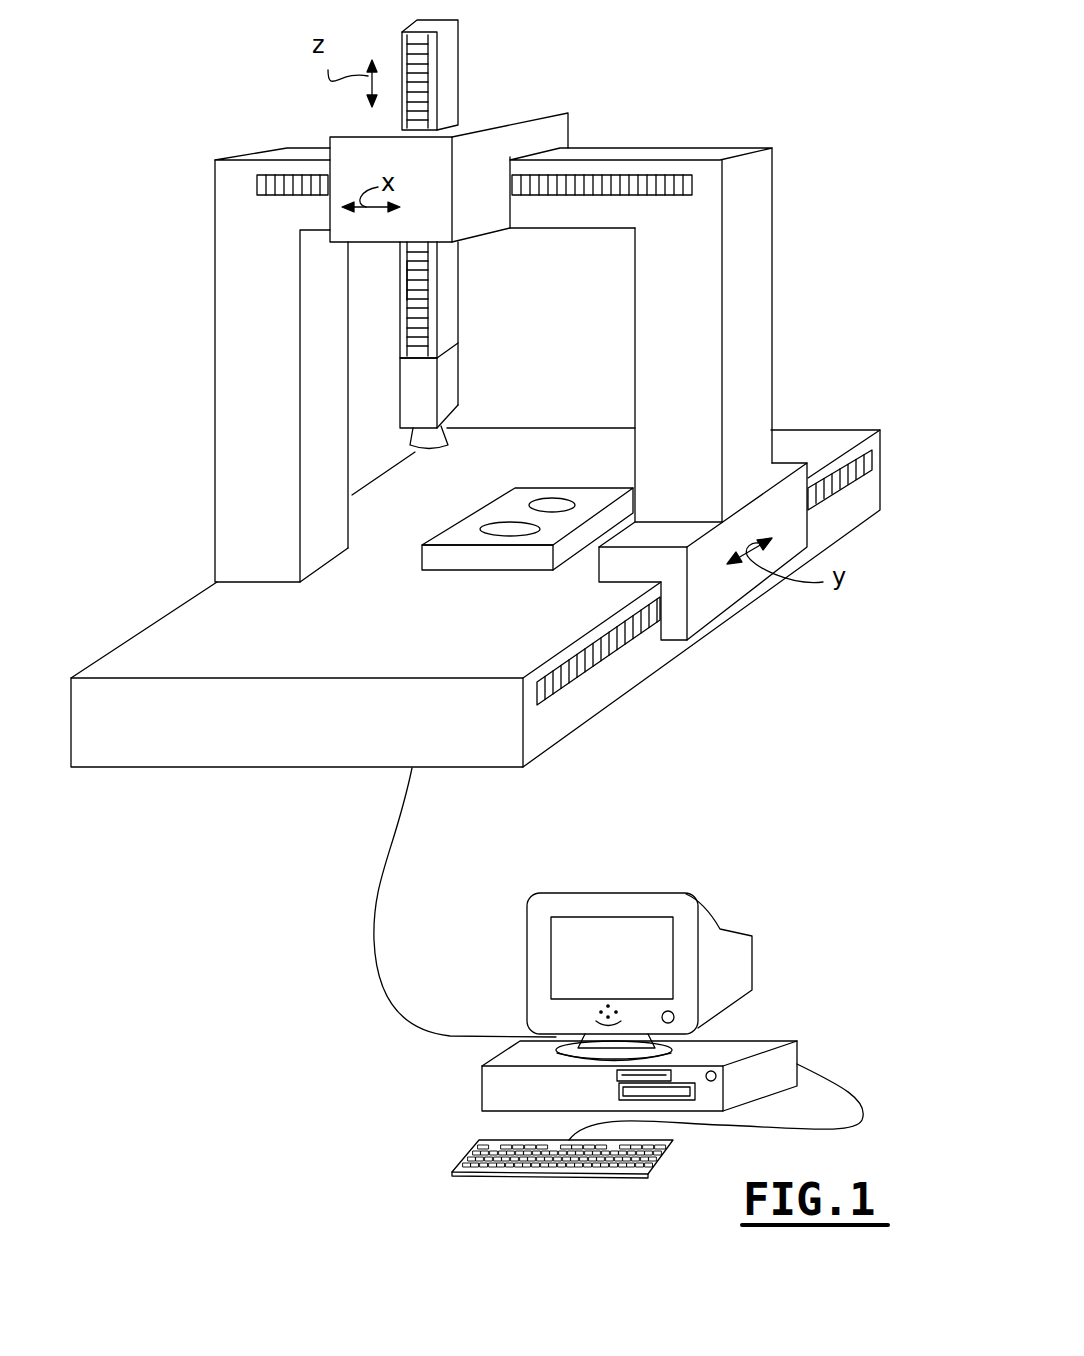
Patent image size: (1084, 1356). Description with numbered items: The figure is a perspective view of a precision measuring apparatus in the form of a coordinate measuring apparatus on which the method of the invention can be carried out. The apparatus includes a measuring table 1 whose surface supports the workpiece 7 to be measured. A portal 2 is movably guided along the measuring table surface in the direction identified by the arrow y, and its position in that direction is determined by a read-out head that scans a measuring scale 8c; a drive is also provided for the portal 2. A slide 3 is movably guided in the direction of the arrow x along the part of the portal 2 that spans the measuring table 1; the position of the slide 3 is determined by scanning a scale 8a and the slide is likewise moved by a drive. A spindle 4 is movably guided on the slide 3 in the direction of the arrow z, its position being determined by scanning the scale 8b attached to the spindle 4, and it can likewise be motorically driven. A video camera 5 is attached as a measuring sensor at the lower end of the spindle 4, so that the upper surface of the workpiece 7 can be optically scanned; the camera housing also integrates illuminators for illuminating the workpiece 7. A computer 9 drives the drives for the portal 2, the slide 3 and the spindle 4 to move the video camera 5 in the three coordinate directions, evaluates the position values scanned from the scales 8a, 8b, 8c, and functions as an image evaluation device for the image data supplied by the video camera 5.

The measuring table 1 is at (806, 440).
The portal 2 is at (747, 263).
The slide 3 is at (493, 115).
The spindle 4 is at (447, 43).
The video camera 5 is at (443, 380).
The workpiece 7 is at (515, 558).
The scale 8a is at (667, 181).
The scale 8b is at (420, 303).
The measuring scale 8c is at (876, 438).
The computer 9 is at (490, 990).